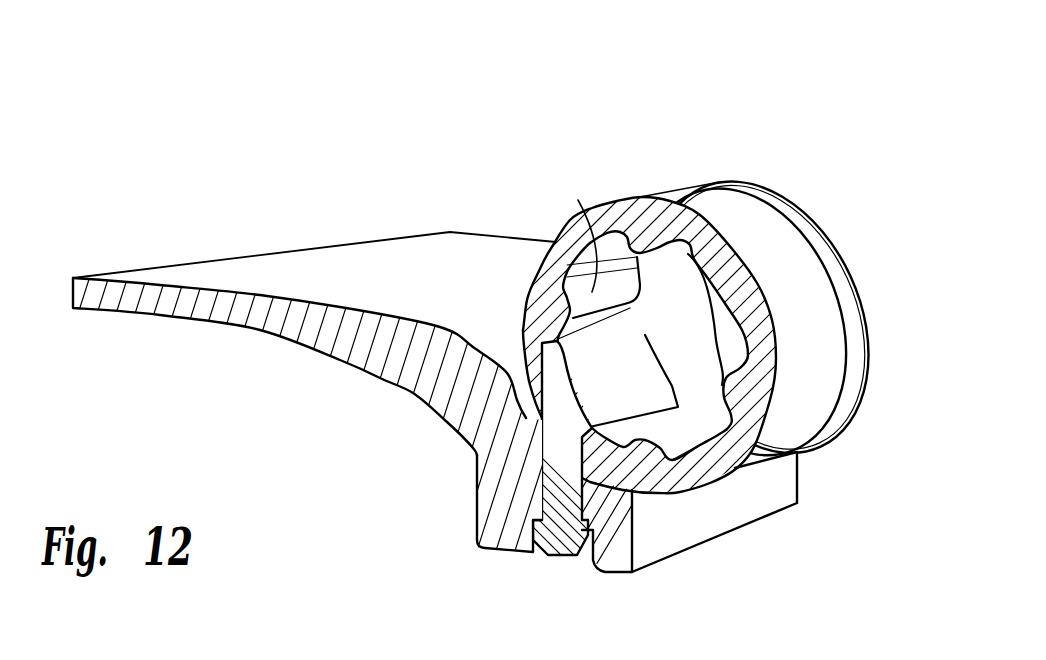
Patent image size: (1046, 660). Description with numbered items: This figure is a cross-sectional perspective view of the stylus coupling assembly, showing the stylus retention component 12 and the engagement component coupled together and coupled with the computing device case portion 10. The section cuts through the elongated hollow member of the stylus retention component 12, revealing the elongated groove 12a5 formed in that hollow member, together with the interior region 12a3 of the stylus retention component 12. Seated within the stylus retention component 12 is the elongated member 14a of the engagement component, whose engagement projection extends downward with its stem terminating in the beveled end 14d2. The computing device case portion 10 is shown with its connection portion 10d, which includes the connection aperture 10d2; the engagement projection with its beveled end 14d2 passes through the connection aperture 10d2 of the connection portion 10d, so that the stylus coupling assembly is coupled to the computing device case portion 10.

The computing device case portion 10 is at (321, 355).
The stylus retention component 12 is at (603, 309).
The socket bore 12a3 is at (598, 290).
The elongated groove 12a5 is at (527, 305).
The elongated member 14a is at (632, 382).
The beveled end 14d2 is at (562, 560).
The connection portion 10d is at (836, 519).
The connection aperture 10d2 is at (538, 558).